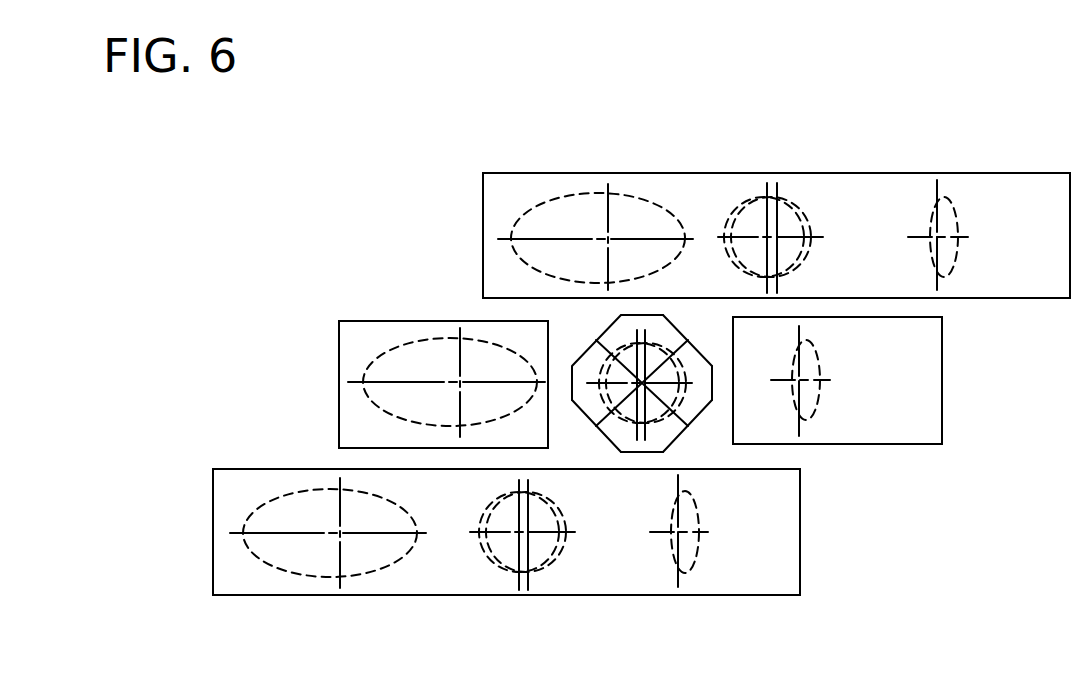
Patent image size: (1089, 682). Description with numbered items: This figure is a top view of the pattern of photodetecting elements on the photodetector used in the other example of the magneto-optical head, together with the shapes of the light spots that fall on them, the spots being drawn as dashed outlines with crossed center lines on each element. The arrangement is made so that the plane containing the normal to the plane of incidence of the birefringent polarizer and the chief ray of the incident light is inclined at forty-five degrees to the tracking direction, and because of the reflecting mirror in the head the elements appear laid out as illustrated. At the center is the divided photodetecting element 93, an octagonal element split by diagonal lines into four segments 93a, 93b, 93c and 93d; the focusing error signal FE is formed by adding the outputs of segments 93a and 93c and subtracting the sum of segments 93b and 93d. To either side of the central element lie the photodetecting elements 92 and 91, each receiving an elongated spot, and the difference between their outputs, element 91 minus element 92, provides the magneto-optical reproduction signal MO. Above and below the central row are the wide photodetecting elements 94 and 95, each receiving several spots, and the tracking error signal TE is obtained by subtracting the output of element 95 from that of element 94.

The photodetecting element 91 is at (920, 395).
The photodetecting element 92 is at (347, 366).
The photodetecting element 93 is at (587, 359).
The segment of photodetecting element 93a is at (658, 322).
The segment of photodetecting element 93b is at (702, 403).
The segment of photodetecting element 93c is at (663, 440).
The segment of photodetecting element 93d is at (585, 405).
The photodetecting element 94 is at (637, 187).
The photodetecting element 95 is at (590, 575).